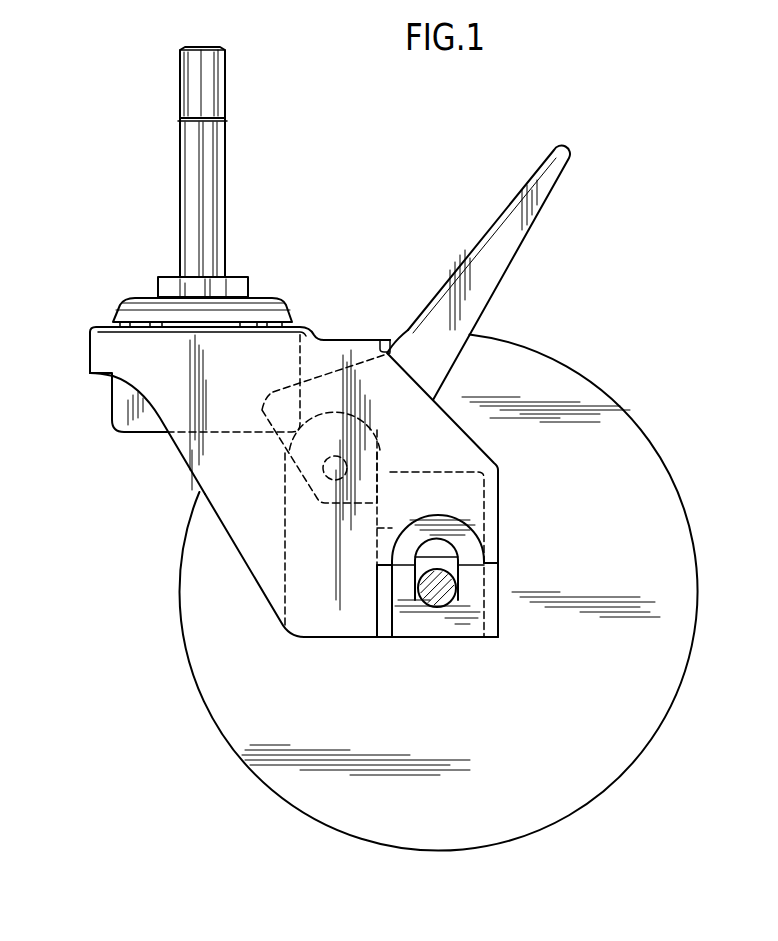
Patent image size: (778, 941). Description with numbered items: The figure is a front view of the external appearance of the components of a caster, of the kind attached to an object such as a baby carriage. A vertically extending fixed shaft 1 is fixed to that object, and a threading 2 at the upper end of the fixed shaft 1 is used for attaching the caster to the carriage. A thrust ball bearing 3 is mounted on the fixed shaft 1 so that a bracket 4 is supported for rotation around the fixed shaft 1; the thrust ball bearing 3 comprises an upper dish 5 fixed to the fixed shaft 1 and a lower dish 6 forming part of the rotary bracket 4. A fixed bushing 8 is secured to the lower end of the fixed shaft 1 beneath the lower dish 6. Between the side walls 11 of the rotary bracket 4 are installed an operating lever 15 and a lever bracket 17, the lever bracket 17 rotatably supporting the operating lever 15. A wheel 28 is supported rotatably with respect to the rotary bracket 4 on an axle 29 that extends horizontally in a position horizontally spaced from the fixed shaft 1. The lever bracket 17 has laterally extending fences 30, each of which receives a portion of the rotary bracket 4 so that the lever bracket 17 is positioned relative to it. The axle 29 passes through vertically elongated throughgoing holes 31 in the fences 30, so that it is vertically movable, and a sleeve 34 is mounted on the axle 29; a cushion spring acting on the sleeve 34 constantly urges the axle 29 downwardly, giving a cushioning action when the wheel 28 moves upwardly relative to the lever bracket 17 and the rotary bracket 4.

The fixed shaft 1 is at (234, 181).
The threading 2 is at (222, 86).
The thrust ball bearing 3 is at (285, 302).
The bracket 4 is at (185, 465).
The upper dish 5 is at (261, 297).
The lower dish 6 is at (308, 337).
The fixed bushing 8 is at (102, 418).
The side walls 11 is at (257, 567).
The operating lever 15 is at (538, 202).
The lever bracket 17 is at (410, 641).
The wheel 28 is at (620, 403).
The axle 29 is at (447, 606).
The fences 30 is at (478, 605).
The elongated throughgoing holes 31 is at (460, 567).
The sleeve 34 is at (388, 638).